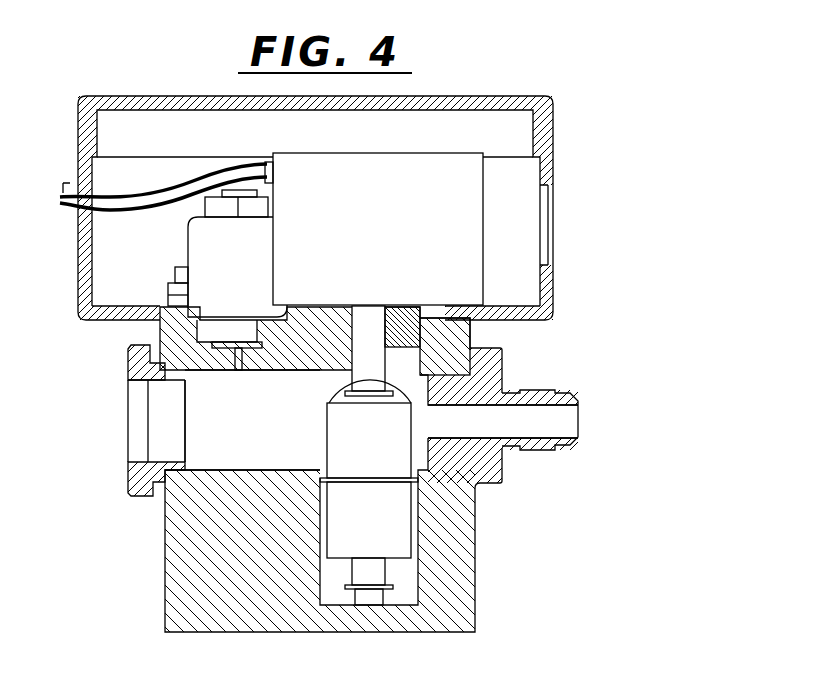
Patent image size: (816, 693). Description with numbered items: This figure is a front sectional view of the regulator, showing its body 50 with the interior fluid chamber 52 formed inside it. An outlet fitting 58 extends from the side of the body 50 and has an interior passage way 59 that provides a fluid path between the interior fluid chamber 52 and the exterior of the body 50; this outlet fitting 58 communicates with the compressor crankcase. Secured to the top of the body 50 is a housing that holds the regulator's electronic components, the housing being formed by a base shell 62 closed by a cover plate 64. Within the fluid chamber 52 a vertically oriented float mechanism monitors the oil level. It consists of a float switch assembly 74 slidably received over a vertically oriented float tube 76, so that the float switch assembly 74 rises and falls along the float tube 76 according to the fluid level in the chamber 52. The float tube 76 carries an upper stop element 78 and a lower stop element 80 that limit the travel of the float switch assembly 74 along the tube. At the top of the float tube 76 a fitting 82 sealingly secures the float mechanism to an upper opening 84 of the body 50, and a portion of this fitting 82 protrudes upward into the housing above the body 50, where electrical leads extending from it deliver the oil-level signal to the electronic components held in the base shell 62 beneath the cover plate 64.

The body 50 is at (477, 538).
The interior fluid chamber 52 is at (233, 426).
The outlet fitting 58 is at (530, 393).
The interior passage way 59 is at (510, 405).
The base shell 62 is at (553, 166).
The cover plate 64 is at (556, 98).
The float switch assembly 74 is at (403, 560).
The float tube 76 is at (387, 338).
The upper stop element 78 is at (345, 393).
The lower stop element 80 is at (343, 578).
The fitting 82 is at (393, 328).
The upper opening 84 is at (392, 328).